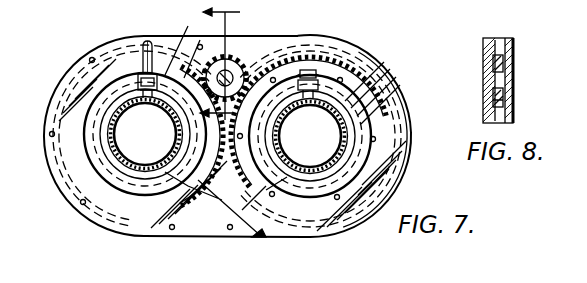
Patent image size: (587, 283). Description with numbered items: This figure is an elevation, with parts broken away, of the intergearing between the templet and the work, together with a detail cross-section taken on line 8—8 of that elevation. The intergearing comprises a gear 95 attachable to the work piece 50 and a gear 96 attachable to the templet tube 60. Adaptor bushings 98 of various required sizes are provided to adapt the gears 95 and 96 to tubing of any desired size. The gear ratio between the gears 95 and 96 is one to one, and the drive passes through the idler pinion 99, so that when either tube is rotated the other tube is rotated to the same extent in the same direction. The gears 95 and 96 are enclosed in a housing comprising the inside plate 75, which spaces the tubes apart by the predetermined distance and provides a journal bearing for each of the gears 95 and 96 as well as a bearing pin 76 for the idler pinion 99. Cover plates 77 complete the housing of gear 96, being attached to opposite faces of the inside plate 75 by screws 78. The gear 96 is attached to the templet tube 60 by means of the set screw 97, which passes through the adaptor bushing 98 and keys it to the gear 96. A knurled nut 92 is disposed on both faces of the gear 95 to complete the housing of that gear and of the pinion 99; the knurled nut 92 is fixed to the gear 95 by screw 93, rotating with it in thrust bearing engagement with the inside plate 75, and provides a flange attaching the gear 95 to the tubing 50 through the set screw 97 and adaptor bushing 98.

In FIG. 7, the section line 8— 8 is at (227, 62).
In FIG. 7, the work piece 50 is at (284, 112).
In FIG. 7, the templet tube 60 is at (112, 117).
In FIG. 7, the inside plate 75 is at (280, 37).
In FIG. 8, the inside plate 75 is at (497, 40).
In FIG. 8, the bearing pin 76 is at (493, 82).
In FIG. 7, the cover plates 77 is at (85, 214).
In FIG. 8, the cover plates 77 is at (488, 40).
In FIG. 7, the screws 78 is at (45, 133).
In FIG. 7, the knurled nut 92 is at (383, 79).
In FIG. 7, the screw 93 is at (352, 72).
In FIG. 7, the gear 95 is at (305, 62).
In FIG. 7, the gear 96 is at (187, 47).
In FIG. 7, the set screw 97 is at (143, 48).
In FIG. 7, the adaptor bushings 98 is at (101, 151).
In FIG. 7, the idler pinion 99 is at (231, 72).
In FIG. 8, the idler pinion 99 is at (493, 63).